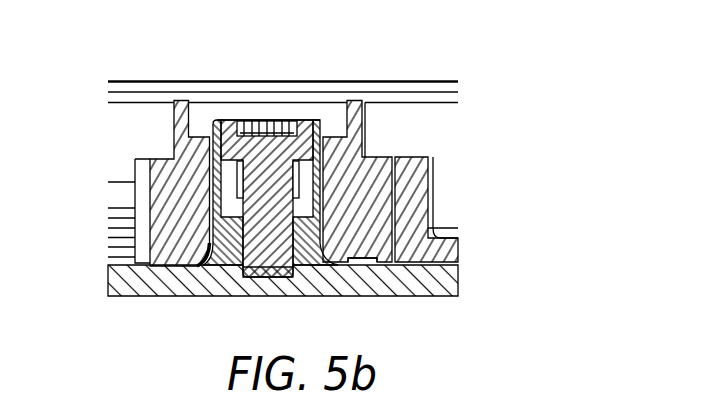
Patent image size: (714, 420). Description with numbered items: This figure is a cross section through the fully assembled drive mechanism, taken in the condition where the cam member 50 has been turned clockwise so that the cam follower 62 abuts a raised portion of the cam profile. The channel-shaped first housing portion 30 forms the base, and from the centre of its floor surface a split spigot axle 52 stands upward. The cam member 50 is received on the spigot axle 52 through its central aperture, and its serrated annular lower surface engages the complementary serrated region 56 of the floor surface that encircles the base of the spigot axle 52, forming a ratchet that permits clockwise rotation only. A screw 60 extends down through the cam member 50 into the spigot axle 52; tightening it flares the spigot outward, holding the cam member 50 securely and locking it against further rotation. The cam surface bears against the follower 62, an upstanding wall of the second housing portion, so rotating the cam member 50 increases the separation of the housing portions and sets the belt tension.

The first housing portion 30 is at (137, 87).
The cam member 50 is at (368, 162).
The spigot axle 52 is at (312, 242).
The serrated region 56 is at (362, 260).
The screw 60 is at (267, 127).
The cam abutment member 62 is at (418, 180).